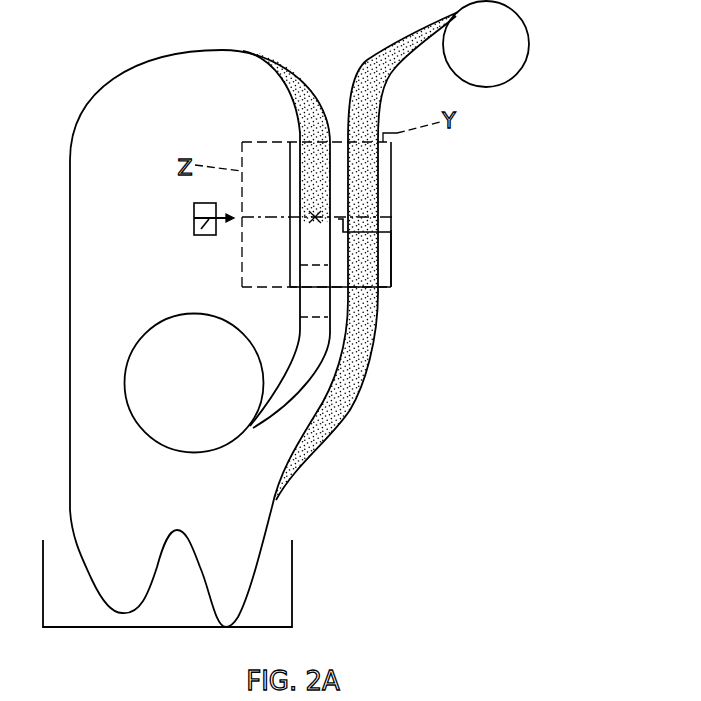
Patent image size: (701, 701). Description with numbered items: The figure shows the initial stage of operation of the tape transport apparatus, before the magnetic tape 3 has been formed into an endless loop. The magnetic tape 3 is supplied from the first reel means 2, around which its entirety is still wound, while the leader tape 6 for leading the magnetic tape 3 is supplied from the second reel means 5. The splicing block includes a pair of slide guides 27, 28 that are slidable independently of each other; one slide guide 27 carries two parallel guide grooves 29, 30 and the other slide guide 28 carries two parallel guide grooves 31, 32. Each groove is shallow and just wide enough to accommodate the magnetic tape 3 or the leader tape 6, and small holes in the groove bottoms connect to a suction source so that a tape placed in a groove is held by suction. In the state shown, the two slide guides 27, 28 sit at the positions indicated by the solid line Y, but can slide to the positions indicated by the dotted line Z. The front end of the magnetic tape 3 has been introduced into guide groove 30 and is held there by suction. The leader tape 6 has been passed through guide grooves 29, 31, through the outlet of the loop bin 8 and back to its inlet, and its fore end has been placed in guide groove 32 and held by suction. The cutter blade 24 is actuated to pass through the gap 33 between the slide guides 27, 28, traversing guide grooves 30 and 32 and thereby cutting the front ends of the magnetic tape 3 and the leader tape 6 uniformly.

The first reel means 2 is at (162, 433).
The magnetic tape 3 is at (305, 337).
The second reel means 5 is at (518, 43).
The leader tape 6 is at (375, 62).
The loop bin 8 is at (102, 628).
The cutter blade 24 is at (195, 226).
The slide guide 27 is at (391, 259).
The slide guide 28 is at (391, 202).
The guide groove 29 is at (368, 282).
The guide groove 30 is at (307, 249).
The guide groove 31 is at (373, 177).
The guide groove 32 is at (303, 146).
The gap 33 is at (391, 232).